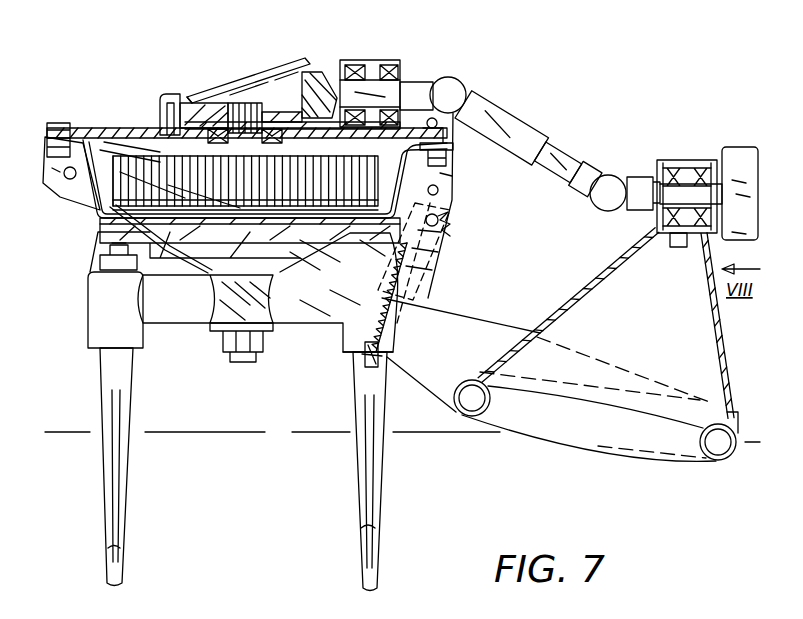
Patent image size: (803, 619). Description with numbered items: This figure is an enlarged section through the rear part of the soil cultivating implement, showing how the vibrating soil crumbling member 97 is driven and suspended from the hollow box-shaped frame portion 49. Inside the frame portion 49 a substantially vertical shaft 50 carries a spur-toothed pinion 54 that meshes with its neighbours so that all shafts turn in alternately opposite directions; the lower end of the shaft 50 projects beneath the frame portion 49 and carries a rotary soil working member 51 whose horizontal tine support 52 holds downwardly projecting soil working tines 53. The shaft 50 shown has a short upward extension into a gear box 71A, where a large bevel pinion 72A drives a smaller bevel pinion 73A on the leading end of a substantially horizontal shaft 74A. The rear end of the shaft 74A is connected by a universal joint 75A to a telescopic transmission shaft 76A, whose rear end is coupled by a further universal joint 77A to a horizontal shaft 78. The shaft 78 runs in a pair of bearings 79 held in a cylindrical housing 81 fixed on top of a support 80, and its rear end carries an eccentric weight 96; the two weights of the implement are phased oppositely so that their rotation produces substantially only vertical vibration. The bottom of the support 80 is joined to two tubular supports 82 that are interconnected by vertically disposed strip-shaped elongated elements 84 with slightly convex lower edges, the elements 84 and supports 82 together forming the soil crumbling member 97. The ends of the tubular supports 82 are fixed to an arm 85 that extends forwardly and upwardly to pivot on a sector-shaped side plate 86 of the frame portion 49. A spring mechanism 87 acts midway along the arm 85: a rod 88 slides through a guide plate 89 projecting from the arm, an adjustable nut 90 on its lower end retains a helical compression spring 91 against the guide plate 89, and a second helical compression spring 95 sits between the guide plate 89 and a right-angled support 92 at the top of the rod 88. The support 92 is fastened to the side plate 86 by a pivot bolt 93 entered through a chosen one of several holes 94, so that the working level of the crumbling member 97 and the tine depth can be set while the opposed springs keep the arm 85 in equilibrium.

The hollow box-shaped frame portion 49 is at (85, 218).
The shaft 50 is at (243, 100).
The rotary soil working member 51 is at (235, 400).
The tine support 52 is at (188, 320).
The soil working tine 53 is at (125, 420).
The pinion 54 is at (133, 152).
The gear box 71A is at (192, 97).
The large bevel pinion 72A is at (178, 96).
The smaller bevel pinion 73A is at (317, 72).
The substantially horizontal shaft 74A is at (363, 87).
The universal joint 75A is at (457, 80).
The telescopic transmission shaft 76A is at (537, 134).
The further universal joint 77A is at (612, 178).
The shaft 78 is at (690, 237).
The bearing 79 is at (680, 168).
The support 80 is at (590, 289).
The cylindrical housing 81 is at (663, 162).
The tubular support 82 is at (455, 414).
The strip-shaped elongated element 84 is at (603, 399).
The arm 85 is at (500, 328).
The side plate 86 is at (443, 173).
The spring mechanism 87 is at (447, 260).
The rod 88 is at (395, 235).
The guide plate 89 is at (365, 283).
The axially adjustable nut 90 is at (388, 362).
The helical compression spring 91 is at (402, 322).
The right-angled support 92 is at (457, 213).
The pivot bolt 93 is at (449, 230).
The hole 94 is at (438, 190).
The second helical compression spring 95 is at (448, 278).
The eccentric weight 96 is at (747, 150).
The soil crumbling member 97 is at (540, 454).